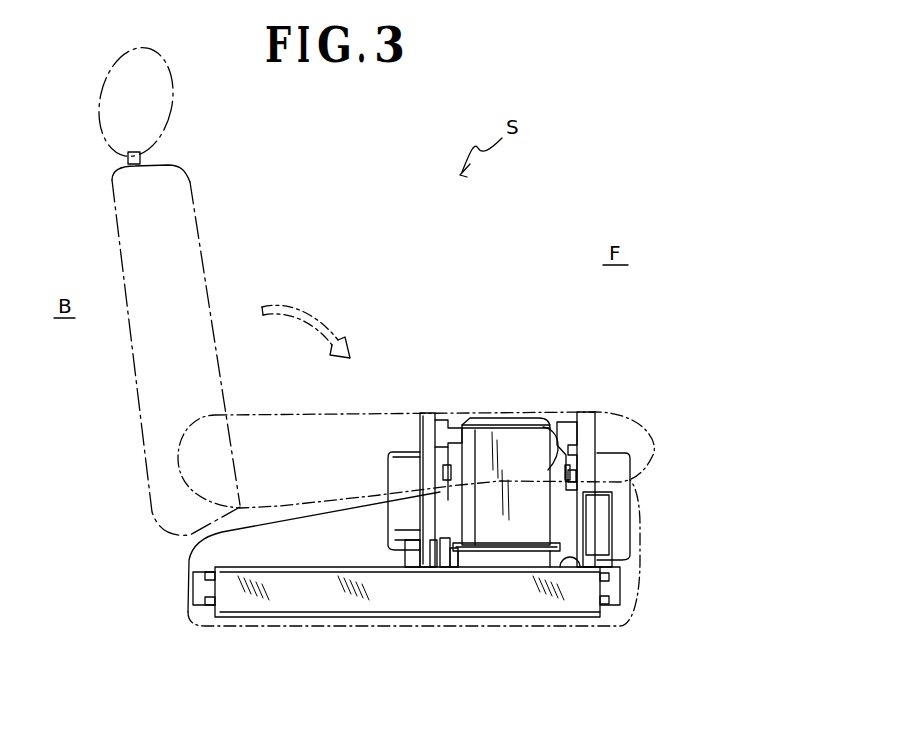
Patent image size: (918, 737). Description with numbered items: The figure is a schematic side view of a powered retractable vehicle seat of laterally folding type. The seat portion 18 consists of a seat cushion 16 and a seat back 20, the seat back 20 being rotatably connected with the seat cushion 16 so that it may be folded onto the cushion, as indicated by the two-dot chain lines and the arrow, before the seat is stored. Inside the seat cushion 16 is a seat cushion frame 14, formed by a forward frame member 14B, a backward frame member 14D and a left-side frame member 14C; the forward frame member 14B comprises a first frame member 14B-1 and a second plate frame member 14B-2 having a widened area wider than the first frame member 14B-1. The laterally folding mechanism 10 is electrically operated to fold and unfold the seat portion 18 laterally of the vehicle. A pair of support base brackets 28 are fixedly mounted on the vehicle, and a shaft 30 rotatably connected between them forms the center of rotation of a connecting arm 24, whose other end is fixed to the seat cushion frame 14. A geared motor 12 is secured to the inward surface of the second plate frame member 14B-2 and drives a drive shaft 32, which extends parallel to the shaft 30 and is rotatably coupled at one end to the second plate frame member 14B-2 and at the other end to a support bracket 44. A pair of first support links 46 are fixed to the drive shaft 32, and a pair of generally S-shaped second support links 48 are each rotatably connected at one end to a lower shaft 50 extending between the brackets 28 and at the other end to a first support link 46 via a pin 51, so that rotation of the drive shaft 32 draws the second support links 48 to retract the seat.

The laterally folding mechanism 10 is at (660, 398).
The geared motor 12 is at (566, 551).
The seat cushion frame 14 is at (461, 597).
The forward frame member 14B is at (702, 552).
The first frame member 14B-1 is at (622, 590).
The second plate frame member 14B-2 is at (628, 522).
The left-side frame member 14C is at (298, 620).
The backward frame member 14D is at (190, 592).
The seat cushion 16 is at (198, 556).
The seat portion 18 is at (130, 522).
The seat back 20 is at (190, 262).
The connecting arm 24 is at (503, 430).
The support base bracket 28 is at (428, 413).
The shaft 30 is at (455, 428).
The drive shaft 32 is at (494, 558).
The support bracket 44 is at (405, 552).
The first support link 46 is at (447, 540).
The second support link 48 is at (440, 497).
The lower shaft 50 is at (451, 473).
The pin 51 is at (466, 553).